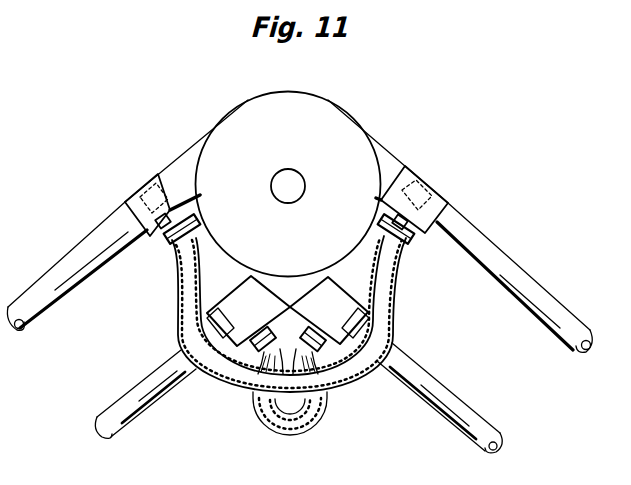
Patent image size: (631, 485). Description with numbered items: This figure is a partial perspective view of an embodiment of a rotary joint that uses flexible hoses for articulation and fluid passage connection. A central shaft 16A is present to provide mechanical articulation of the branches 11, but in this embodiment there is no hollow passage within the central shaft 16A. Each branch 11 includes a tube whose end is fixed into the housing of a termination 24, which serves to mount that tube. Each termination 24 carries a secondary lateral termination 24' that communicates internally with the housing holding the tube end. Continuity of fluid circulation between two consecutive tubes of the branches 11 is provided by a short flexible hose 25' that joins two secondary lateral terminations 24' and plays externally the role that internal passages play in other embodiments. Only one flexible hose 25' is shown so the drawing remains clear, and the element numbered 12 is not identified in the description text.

The branch 11 is at (46, 270).
The circular disc 12 is at (243, 104).
The central shaft 16A is at (293, 178).
The termination 24 is at (276, 174).
The secondary lateral termination 24' is at (291, 260).
The short flexible hose 25' is at (289, 340).